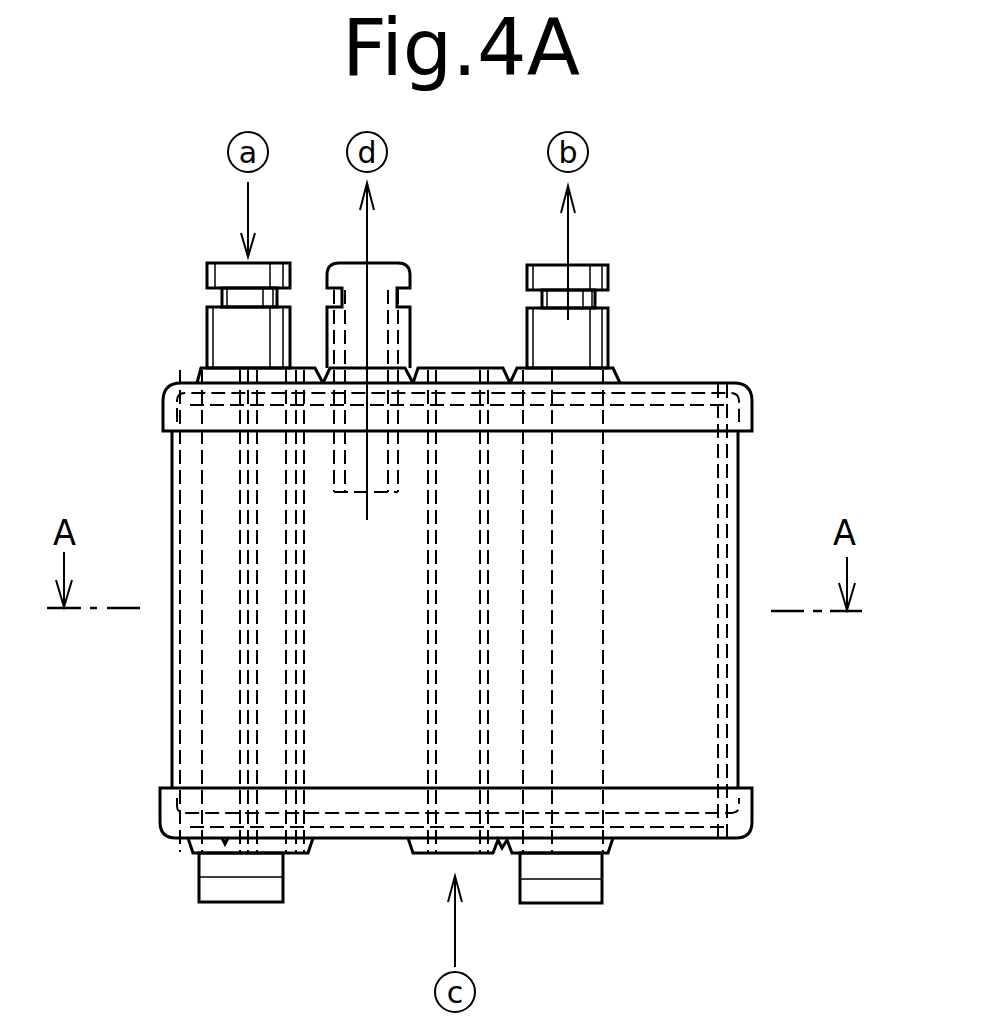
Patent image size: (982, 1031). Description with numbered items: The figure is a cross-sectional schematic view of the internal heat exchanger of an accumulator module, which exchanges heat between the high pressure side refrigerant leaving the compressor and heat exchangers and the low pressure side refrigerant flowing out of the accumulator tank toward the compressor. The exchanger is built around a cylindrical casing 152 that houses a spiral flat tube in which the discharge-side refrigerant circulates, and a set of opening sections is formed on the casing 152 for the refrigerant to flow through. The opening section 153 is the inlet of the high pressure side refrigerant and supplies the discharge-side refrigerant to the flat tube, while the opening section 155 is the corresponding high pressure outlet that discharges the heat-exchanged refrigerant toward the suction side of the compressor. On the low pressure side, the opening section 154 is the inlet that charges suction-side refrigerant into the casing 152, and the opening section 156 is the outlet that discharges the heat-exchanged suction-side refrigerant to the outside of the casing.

The casing 152 is at (738, 730).
The opening section 153 is at (222, 263).
The opening section 154 is at (437, 853).
The opening section 155 is at (590, 265).
The opening section 156 is at (377, 263).